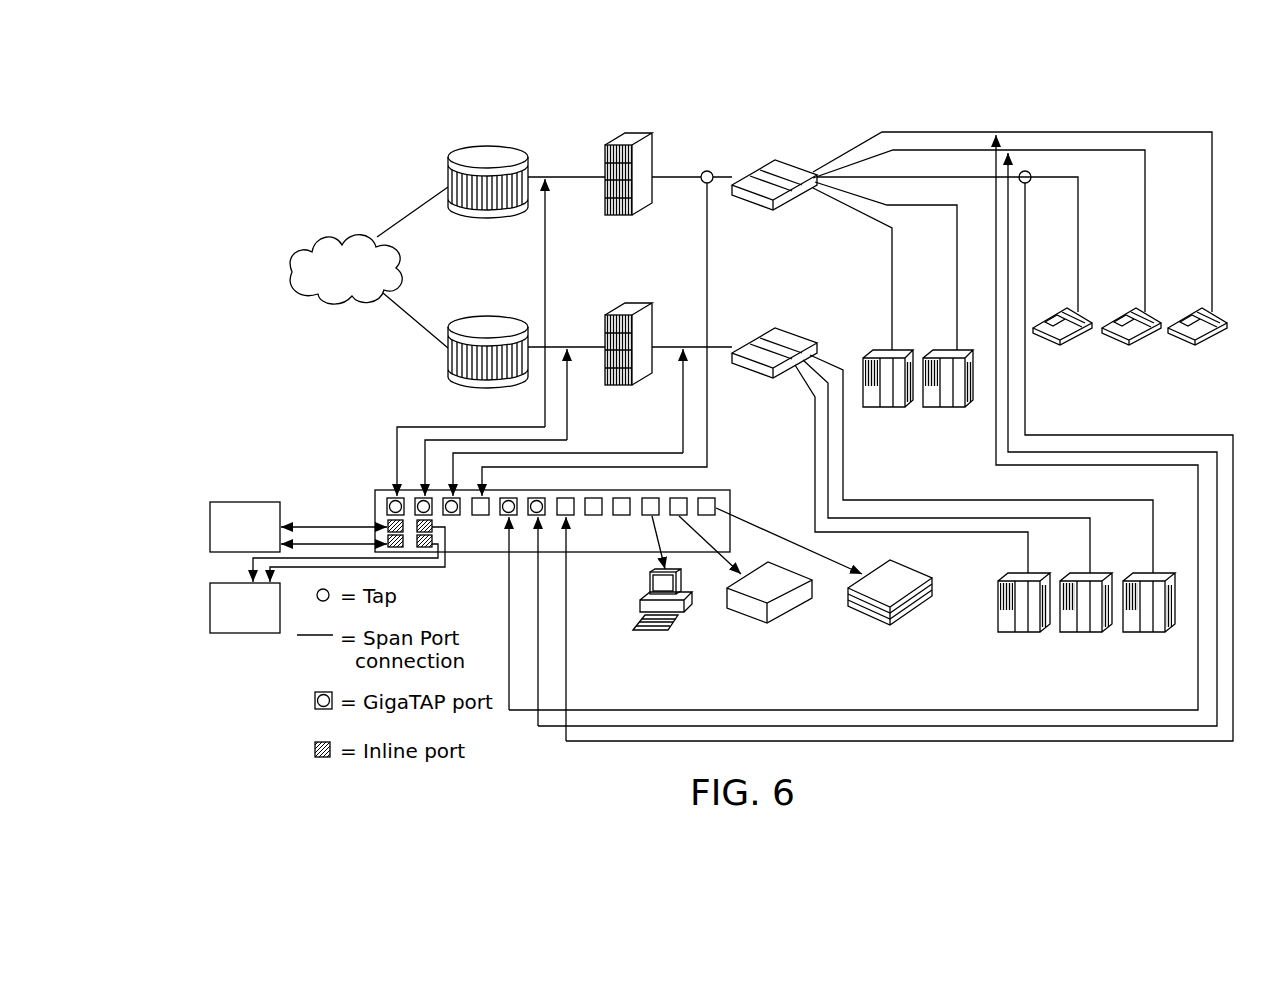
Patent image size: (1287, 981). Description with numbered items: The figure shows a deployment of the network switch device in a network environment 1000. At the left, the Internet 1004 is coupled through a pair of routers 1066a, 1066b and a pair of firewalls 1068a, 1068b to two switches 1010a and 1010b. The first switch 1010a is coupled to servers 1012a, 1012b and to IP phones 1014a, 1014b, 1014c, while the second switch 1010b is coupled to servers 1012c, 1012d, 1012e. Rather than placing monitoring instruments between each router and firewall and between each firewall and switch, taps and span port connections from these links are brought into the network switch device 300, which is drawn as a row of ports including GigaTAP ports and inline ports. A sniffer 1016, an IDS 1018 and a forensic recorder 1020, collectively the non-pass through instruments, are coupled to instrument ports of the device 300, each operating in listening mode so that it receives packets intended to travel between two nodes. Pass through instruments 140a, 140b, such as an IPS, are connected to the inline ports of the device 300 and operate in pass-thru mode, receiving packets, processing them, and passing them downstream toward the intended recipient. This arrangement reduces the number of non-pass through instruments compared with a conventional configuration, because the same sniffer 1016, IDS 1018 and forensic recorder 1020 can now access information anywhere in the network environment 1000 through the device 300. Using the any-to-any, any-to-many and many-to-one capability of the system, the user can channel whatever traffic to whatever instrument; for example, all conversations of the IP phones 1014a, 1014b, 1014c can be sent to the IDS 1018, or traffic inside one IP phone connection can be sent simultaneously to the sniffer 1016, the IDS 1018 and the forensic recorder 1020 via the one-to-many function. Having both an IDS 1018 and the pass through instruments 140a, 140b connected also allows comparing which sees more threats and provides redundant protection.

The network environment 1000 is at (1094, 70).
The Internet 1004 is at (351, 232).
The router 1066a is at (488, 146).
The router 1066b is at (488, 316).
The firewall 1068a is at (620, 136).
The firewall 1068b is at (620, 306).
The switch 1010a is at (766, 162).
The switch 1010b is at (766, 330).
The server 1012a is at (875, 410).
The server 1012b is at (970, 410).
The server 1012c is at (1010, 633).
The server 1012d is at (1075, 633).
The server 1012e is at (1168, 633).
The IP phone 1014a is at (1058, 349).
The IP phone 1014b is at (1132, 343).
The IP phone 1014c is at (1215, 336).
The GigaTAP network tap device 300 is at (377, 520).
The pass through instrument 140a is at (210, 526).
The pass through instrument 140b is at (210, 608).
The sniffer 1016 is at (648, 584).
The IDS 1018 is at (735, 625).
The forensic recorder 1020 is at (855, 612).